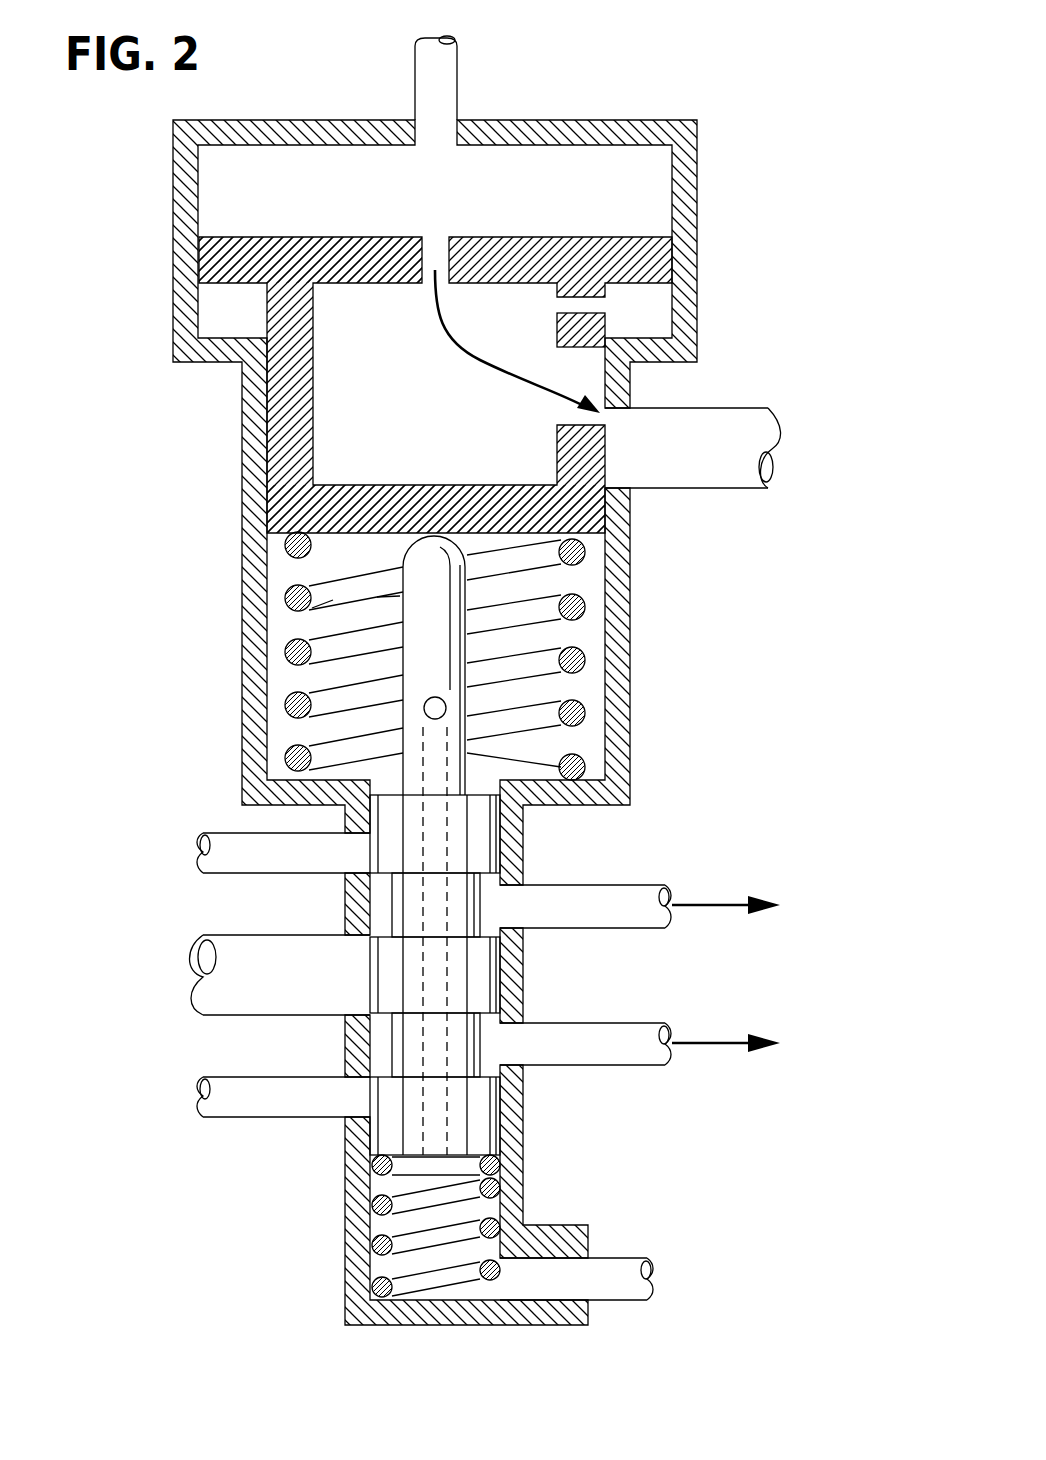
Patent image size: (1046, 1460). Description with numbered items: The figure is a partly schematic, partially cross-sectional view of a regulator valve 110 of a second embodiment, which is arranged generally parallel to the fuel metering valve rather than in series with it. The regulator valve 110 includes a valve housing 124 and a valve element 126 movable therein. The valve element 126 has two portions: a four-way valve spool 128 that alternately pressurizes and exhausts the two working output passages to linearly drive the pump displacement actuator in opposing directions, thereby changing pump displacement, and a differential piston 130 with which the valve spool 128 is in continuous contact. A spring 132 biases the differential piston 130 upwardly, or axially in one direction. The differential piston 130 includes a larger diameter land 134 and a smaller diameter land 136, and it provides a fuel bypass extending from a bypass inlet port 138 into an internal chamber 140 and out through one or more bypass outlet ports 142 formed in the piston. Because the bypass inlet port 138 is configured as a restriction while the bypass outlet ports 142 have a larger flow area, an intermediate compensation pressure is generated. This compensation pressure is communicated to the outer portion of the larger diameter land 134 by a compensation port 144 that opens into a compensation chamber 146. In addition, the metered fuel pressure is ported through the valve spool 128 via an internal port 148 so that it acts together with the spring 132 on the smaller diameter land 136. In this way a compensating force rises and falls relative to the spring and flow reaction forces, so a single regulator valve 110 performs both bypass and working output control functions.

The regulator valve 110 is at (800, 114).
The valve housing 124 is at (697, 174).
The valve element 126 is at (392, 557).
The four-way valve spool 128 is at (413, 838).
The differential piston 130 is at (292, 456).
The spring 132 is at (598, 627).
The larger diameter land 134 is at (230, 237).
The smaller diameter land 136 is at (580, 505).
The bypass inlet port 138 is at (443, 242).
The internal chamber 140 is at (399, 454).
The bypass outlet ports 142 is at (565, 406).
The compensation port 144 is at (560, 305).
The compensation chamber 146 is at (658, 309).
The internal port 148 is at (446, 704).